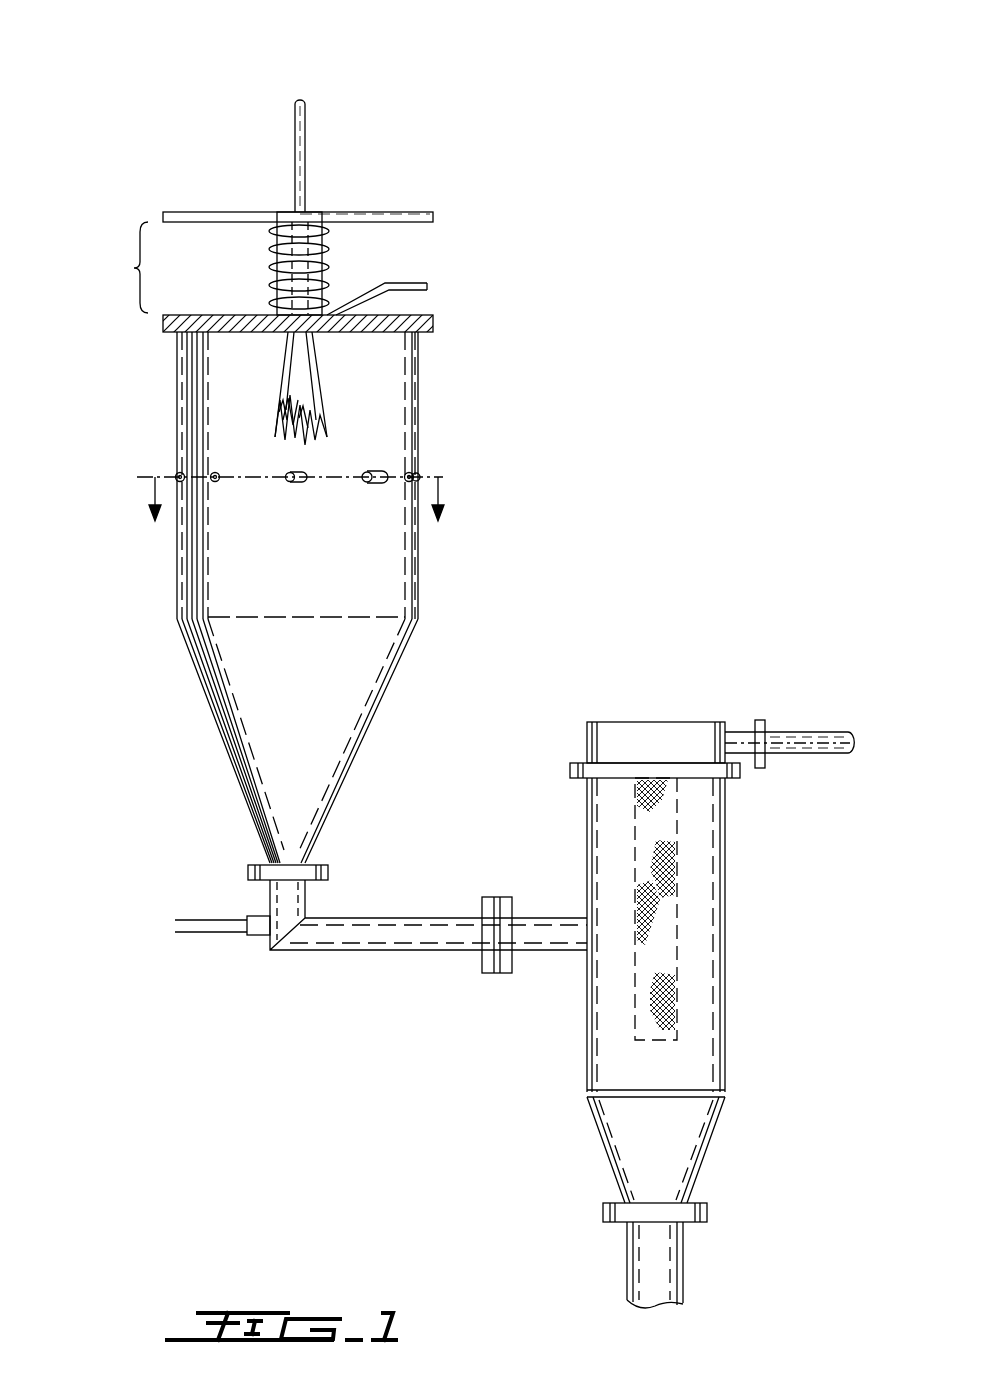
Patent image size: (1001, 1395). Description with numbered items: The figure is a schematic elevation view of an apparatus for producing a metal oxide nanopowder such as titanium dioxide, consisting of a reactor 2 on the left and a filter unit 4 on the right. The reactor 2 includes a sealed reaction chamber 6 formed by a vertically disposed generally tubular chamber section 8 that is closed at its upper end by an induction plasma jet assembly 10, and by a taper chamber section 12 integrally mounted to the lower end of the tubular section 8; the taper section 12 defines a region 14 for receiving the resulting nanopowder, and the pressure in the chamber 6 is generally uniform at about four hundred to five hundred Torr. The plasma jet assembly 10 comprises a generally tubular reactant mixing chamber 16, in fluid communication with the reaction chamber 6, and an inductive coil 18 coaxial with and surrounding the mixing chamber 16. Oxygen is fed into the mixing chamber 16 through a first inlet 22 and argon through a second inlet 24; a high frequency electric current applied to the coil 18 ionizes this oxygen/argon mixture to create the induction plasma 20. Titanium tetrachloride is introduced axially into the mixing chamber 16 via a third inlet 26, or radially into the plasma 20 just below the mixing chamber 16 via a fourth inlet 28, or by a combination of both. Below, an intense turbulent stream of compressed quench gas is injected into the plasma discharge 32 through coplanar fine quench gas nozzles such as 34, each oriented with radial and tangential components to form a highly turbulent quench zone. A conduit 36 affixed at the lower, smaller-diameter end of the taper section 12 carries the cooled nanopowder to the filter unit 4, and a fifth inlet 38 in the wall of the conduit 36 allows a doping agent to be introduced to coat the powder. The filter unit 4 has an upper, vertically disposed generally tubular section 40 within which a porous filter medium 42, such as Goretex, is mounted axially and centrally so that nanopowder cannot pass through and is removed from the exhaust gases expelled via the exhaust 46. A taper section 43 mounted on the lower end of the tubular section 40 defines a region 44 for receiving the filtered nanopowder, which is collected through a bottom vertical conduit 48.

The reactor 2 is at (562, 464).
The filter unit 4 is at (748, 870).
The sealed reaction chamber 6 is at (222, 568).
The generally tubular chamber section 8 is at (420, 375).
The induction plasma jet assembly 10 is at (134, 268).
The taper chamber section 12 is at (360, 742).
The region 14 is at (260, 742).
The reactant mixing chamber 16 is at (296, 221).
The inductive coil 18 is at (328, 266).
The plasma 20 is at (296, 338).
The first inlet 22 is at (187, 212).
The second inlet 24 is at (418, 212).
The third inlet 26 is at (302, 100).
The fourth inlet 28 is at (428, 284).
The plasma discharge 32 is at (293, 412).
The quench gas nozzle 34 is at (375, 472).
The conduit 36 is at (388, 950).
The fifth inlet 38 is at (210, 933).
The generally tubular section 40 is at (725, 935).
The porous filter medium 42 is at (640, 980).
The taper section 43 is at (702, 1150).
The region 44 is at (623, 1130).
The exhaust 46 is at (808, 732).
The bottom vertical conduit 48 is at (663, 1258).